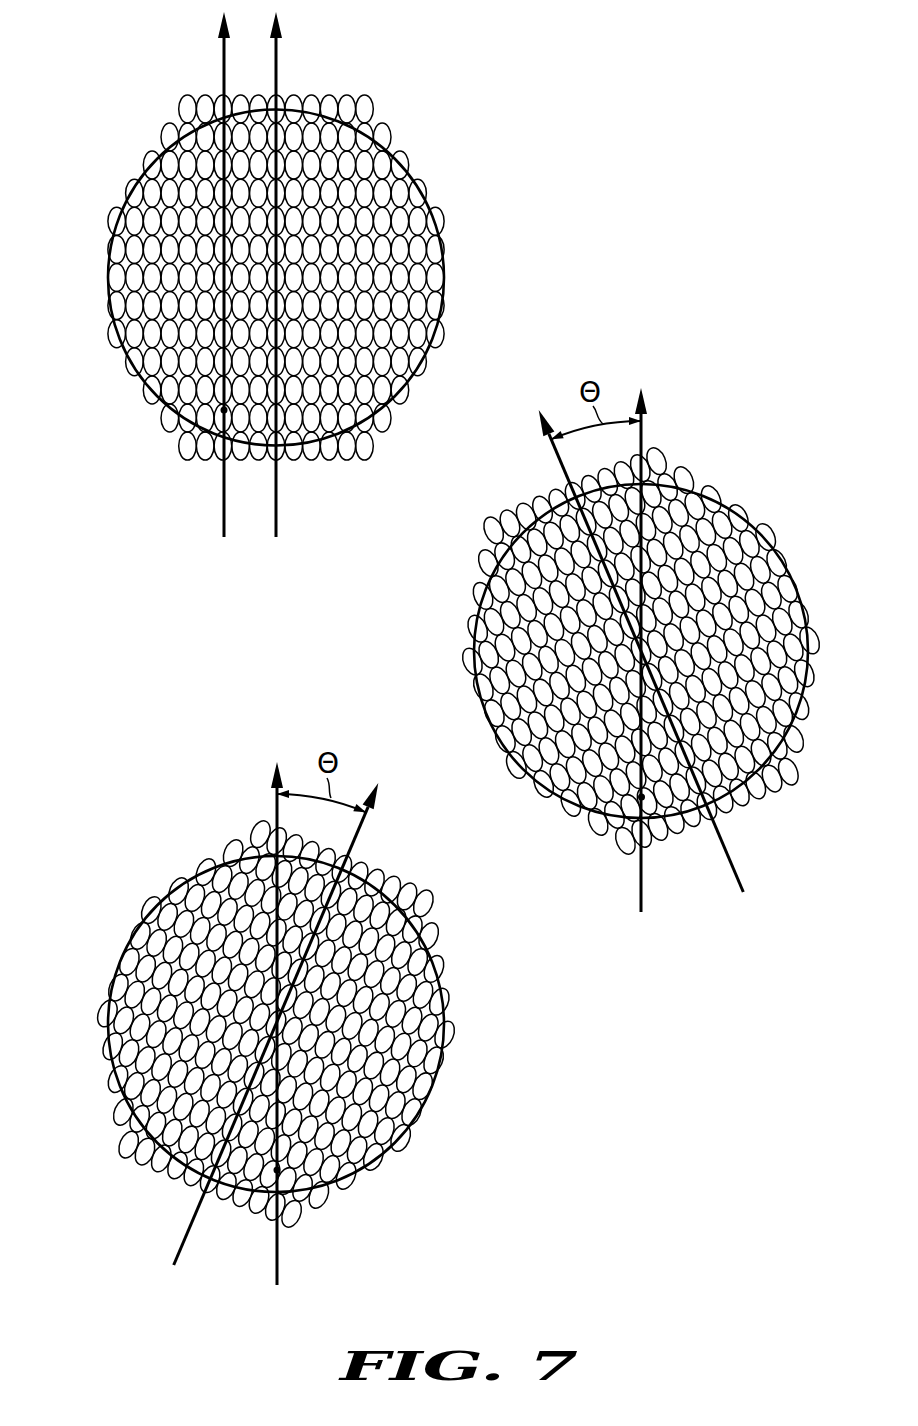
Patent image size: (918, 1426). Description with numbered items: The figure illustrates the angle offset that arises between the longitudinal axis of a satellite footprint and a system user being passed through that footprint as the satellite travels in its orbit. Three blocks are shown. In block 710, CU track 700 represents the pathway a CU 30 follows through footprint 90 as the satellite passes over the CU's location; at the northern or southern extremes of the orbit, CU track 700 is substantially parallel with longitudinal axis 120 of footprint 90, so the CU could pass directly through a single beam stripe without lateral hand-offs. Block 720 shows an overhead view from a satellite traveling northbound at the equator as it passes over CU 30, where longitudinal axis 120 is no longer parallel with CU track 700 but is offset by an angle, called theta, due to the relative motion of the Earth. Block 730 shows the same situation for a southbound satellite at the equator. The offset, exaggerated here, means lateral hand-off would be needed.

The CU 30 is at (224, 410).
The footprint 90 is at (70, 235).
The longitudinal axis 120 is at (278, 68).
The CU track 700 is at (222, 68).
The block 710 is at (537, 222).
The block 720 is at (860, 780).
The block 730 is at (410, 1237).